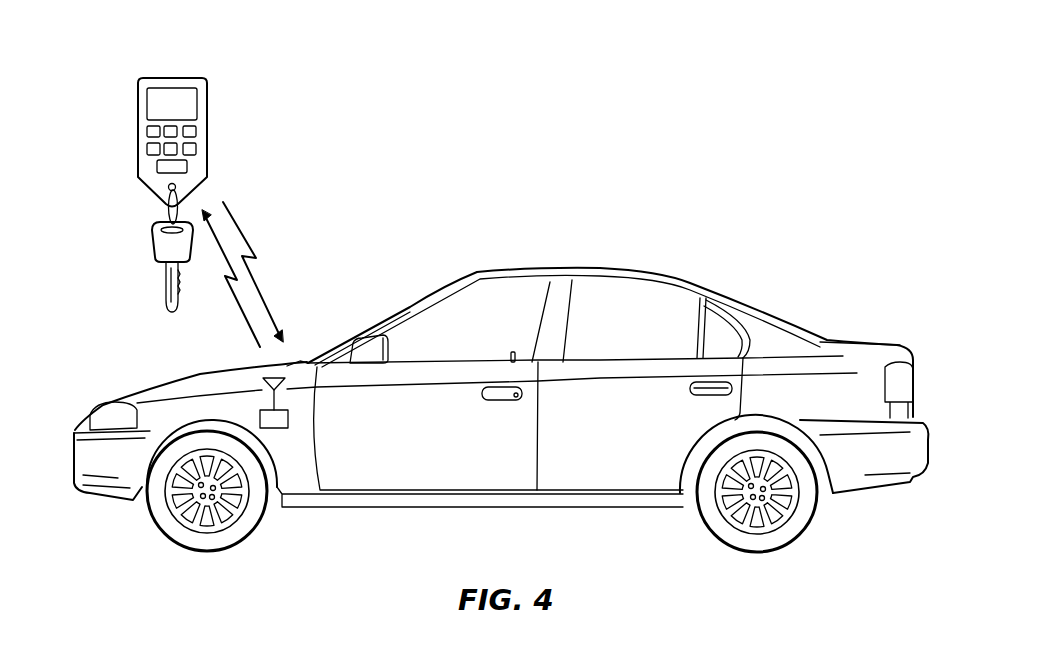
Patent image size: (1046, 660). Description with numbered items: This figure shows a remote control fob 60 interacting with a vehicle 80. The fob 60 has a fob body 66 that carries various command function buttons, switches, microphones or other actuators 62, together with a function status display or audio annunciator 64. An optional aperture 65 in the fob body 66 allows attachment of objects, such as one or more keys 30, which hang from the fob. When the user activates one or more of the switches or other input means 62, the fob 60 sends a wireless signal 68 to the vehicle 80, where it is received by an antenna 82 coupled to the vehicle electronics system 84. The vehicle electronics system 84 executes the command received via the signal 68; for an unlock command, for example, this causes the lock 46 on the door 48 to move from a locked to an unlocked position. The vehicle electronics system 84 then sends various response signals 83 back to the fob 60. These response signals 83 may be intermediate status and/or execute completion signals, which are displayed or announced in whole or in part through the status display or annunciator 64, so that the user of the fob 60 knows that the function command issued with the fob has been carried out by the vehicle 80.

The key 30 is at (153, 250).
The lock 46 is at (512, 360).
The door 48 is at (413, 448).
The fob 60 is at (192, 112).
The actuators 62 is at (135, 123).
The function status display or audio annunciator 64 is at (147, 100).
The aperture 65 is at (167, 192).
The fob body 66 is at (175, 78).
The wireless signal 68 is at (245, 317).
The vehicle 80 is at (501, 392).
The antenna 82 is at (277, 378).
The response signals 83 is at (252, 256).
The vehicle electronics system 84 is at (274, 428).